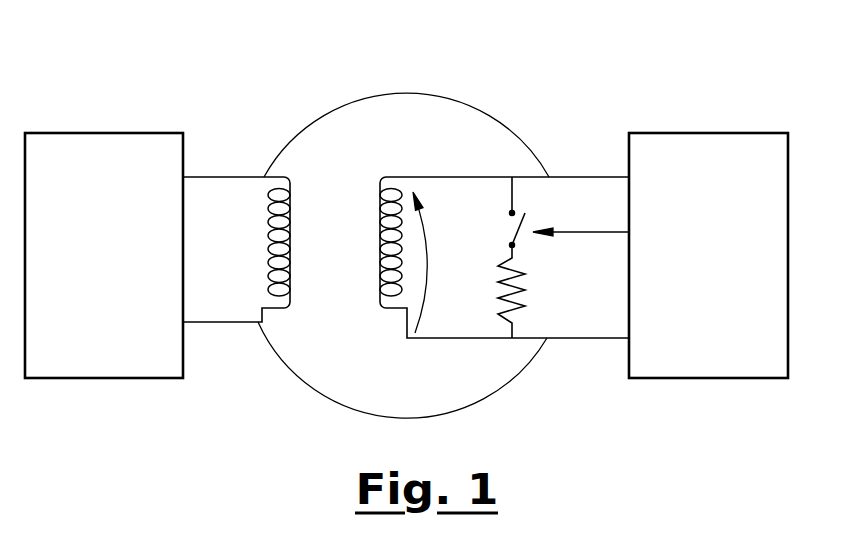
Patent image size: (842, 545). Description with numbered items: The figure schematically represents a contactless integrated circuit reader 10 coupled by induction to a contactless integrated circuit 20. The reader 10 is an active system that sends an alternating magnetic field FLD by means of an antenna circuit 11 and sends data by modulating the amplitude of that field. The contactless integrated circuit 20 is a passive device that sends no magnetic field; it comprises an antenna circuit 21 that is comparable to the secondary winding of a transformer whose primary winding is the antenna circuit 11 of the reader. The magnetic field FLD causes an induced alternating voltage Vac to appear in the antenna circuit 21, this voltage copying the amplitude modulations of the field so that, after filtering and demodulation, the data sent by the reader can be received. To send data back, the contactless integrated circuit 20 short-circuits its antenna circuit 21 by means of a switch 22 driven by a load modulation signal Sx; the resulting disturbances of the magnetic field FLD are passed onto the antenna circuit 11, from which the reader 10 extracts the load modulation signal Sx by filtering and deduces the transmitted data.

The contactless integrated circuit reader 10 is at (120, 262).
The contactless integrated circuit 20 is at (685, 258).
The antenna circuit 11 is at (291, 178).
The antenna circuit 21 is at (381, 181).
The switch 22 is at (526, 211).
The alternating magnetic field FLD is at (435, 92).
The induced alternating voltage Vac is at (446, 262).
The load modulation signal Sx is at (581, 246).